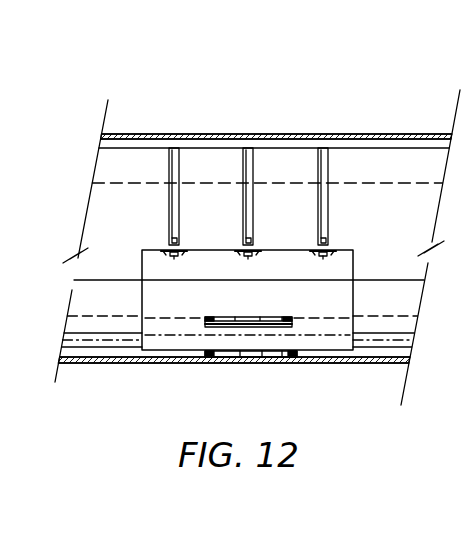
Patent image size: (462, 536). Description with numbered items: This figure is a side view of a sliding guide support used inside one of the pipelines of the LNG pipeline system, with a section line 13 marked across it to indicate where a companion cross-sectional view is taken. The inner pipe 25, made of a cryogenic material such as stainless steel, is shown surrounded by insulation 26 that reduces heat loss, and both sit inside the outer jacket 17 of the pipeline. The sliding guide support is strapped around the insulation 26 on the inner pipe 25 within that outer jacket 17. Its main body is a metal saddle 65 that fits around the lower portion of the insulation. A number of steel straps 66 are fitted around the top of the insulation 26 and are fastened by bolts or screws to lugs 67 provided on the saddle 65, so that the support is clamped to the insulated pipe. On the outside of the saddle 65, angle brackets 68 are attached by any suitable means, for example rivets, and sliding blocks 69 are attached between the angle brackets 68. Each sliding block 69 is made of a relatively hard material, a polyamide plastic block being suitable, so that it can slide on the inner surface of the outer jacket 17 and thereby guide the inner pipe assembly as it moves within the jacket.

The section line 13- 13 is at (132, 77).
The outer jacket 17 is at (358, 134).
The inner pipe 25 is at (214, 182).
The insulation 26 is at (406, 148).
The saddle 65 is at (358, 297).
The steel straps 66 is at (174, 147).
The lugs 67 is at (184, 256).
The angle brackets 68 is at (228, 317).
The sliding blocks 69 is at (293, 328).